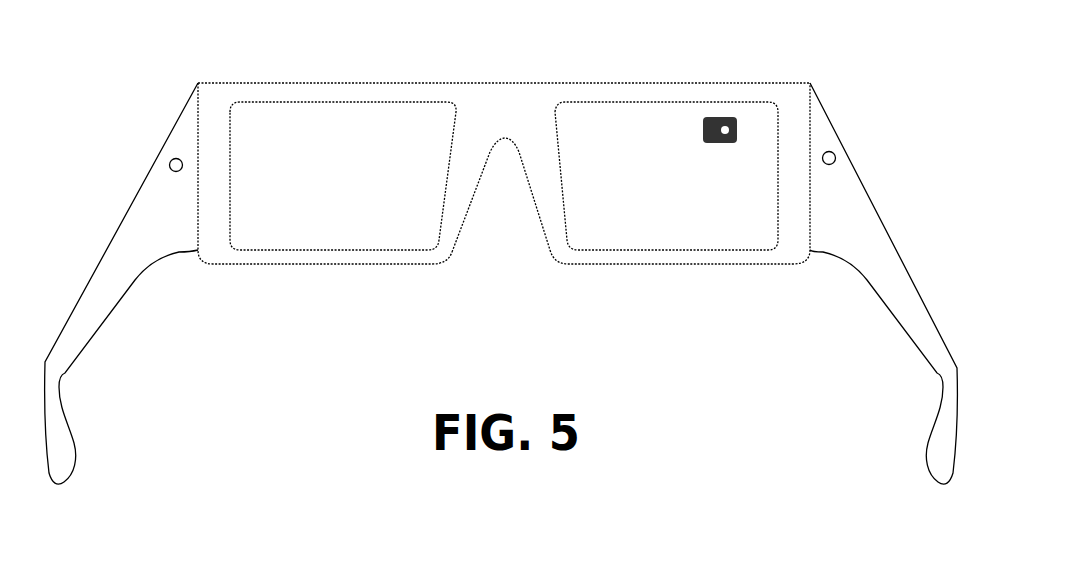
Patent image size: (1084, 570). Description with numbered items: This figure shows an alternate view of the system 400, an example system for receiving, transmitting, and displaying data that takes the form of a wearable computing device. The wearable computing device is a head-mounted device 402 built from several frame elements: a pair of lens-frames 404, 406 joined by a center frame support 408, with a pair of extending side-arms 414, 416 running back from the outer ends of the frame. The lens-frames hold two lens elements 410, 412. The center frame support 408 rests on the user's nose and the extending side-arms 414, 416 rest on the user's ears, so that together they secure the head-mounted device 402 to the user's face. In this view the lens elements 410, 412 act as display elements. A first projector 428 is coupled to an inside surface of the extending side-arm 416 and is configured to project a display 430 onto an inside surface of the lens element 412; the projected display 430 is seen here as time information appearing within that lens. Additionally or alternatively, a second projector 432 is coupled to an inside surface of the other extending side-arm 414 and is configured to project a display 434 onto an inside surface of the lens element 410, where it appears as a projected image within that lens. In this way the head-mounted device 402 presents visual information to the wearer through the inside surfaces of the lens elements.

The system 400 is at (775, 387).
The head-mounted device 402 is at (252, 62).
The lens-frame 404 is at (765, 265).
The lens-frame 406 is at (257, 265).
The center frame support 408 is at (502, 83).
The lens element 410 is at (625, 240).
The lens element 412 is at (362, 240).
The extending side-arm 414 is at (875, 207).
The extending side-arm 416 is at (108, 243).
The first projector 428 is at (169, 163).
The display 430 is at (333, 135).
The second projector 432 is at (830, 150).
The display 434 is at (707, 135).